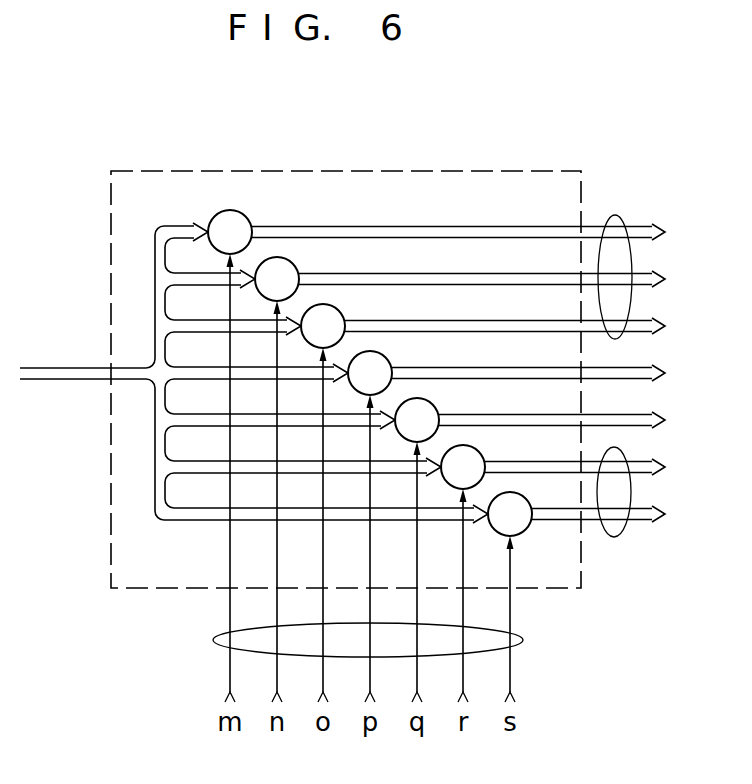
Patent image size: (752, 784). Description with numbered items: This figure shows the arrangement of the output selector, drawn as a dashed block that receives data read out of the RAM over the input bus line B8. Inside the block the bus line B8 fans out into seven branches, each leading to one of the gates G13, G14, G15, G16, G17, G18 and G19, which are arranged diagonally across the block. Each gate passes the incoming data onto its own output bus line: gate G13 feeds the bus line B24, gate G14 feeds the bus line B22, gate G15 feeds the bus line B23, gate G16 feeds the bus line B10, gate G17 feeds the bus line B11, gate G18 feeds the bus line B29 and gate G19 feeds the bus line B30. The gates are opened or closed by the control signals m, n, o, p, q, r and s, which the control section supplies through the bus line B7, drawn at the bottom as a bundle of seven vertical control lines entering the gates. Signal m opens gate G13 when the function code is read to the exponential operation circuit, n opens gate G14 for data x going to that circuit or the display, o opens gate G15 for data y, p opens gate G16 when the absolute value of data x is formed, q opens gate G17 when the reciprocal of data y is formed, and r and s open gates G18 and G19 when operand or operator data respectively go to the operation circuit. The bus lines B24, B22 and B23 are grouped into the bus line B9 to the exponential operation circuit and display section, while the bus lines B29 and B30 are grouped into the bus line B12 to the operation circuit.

The bus line B7 is at (525, 640).
The bus line B8 is at (54, 367).
The bus line B9 is at (613, 214).
The bus line B10 is at (500, 367).
The bus line B11 is at (500, 414).
The bus line B12 is at (614, 538).
The bus line B22 is at (500, 273).
The bus line B23 is at (500, 320).
The bus line B24 is at (513, 224).
The bus line B29 is at (502, 461).
The bus line B30 is at (549, 521).
The gate G13 is at (230, 232).
The gate G14 is at (277, 279).
The gate G15 is at (323, 326).
The gate G16 is at (370, 373).
The gate G17 is at (417, 420).
The gate G18 is at (463, 467).
The gate G19 is at (510, 514).